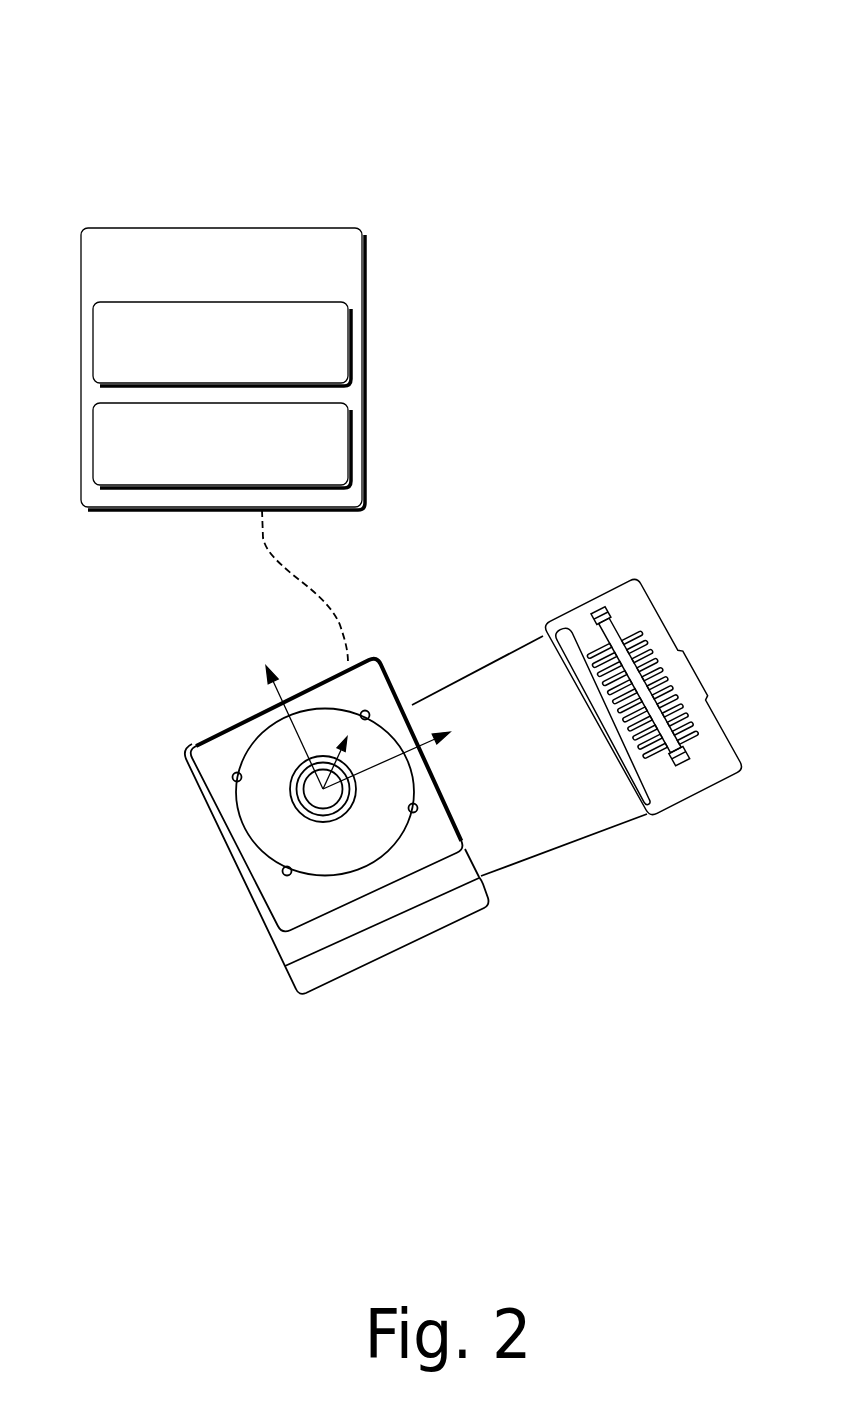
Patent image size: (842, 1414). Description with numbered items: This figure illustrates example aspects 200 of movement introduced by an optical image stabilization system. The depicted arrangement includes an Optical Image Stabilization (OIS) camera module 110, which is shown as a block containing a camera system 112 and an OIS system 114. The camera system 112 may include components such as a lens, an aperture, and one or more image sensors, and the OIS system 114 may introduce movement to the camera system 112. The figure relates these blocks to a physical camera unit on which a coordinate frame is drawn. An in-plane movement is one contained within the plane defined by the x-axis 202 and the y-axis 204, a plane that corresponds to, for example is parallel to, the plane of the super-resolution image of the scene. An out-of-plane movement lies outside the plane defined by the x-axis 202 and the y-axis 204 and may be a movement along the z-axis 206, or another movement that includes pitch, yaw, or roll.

The example aspects of movement 200 is at (150, 39).
The Optical Image Stabilization (OIS) camera module 110 is at (223, 369).
The camera system 112 is at (222, 344).
The OIS system 114 is at (222, 445).
The x-axis 202 is at (412, 771).
The y-axis 204 is at (302, 760).
The z-axis 206 is at (354, 782).